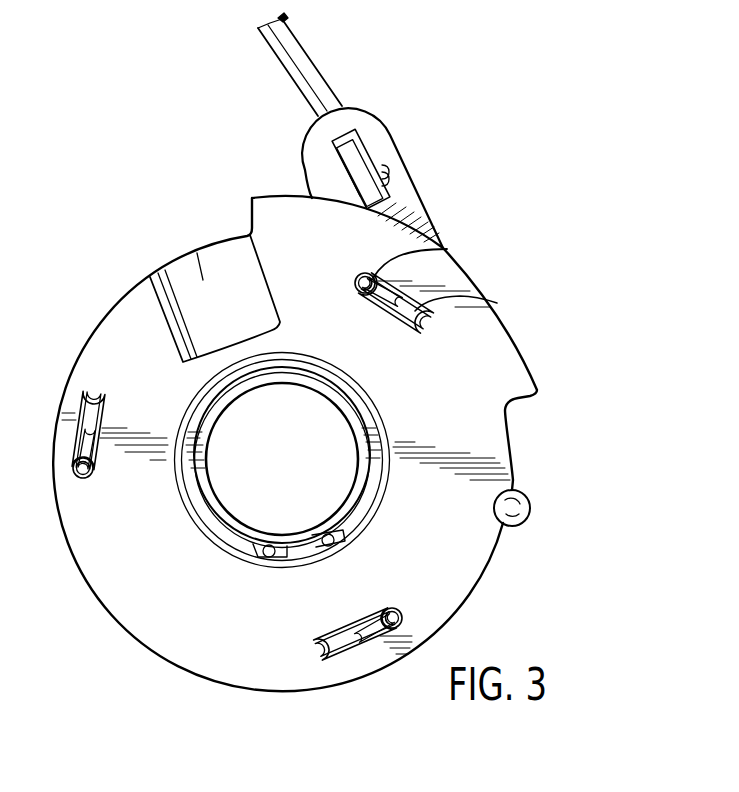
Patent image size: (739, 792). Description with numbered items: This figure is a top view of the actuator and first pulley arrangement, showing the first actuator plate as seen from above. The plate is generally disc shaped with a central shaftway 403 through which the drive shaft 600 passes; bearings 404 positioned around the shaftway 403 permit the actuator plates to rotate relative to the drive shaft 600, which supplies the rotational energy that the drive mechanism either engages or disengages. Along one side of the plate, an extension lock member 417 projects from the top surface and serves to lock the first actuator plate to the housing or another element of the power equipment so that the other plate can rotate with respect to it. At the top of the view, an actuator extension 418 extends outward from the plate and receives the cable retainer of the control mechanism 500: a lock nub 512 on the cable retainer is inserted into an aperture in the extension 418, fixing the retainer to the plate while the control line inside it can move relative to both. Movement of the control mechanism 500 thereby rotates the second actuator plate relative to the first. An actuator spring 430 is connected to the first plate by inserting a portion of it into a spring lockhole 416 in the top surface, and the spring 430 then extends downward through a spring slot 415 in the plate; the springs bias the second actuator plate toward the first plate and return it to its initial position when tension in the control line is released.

The control mechanism 500 is at (308, 58).
The lock nub 512 is at (363, 170).
The actuator extension 418 is at (408, 198).
The spring lockhole 416 is at (447, 250).
The spring slot 415 is at (490, 301).
The actuator spring 430 is at (372, 294).
The extension lock member 417 is at (522, 508).
The drive shaft 600 is at (232, 495).
The bearings 404 is at (340, 533).
The shaftway 403 is at (280, 566).